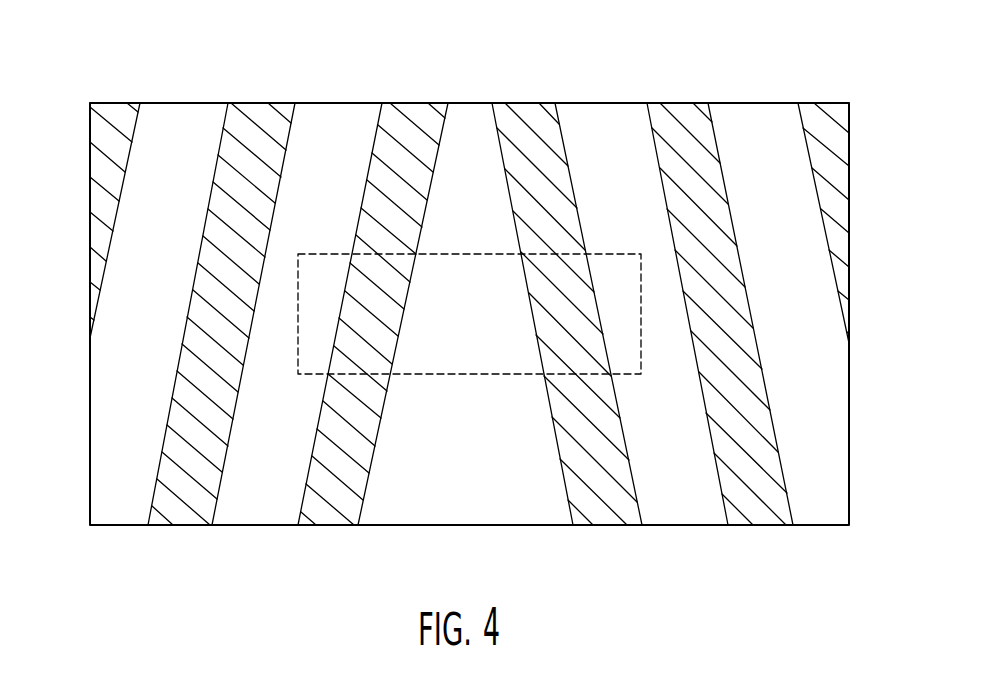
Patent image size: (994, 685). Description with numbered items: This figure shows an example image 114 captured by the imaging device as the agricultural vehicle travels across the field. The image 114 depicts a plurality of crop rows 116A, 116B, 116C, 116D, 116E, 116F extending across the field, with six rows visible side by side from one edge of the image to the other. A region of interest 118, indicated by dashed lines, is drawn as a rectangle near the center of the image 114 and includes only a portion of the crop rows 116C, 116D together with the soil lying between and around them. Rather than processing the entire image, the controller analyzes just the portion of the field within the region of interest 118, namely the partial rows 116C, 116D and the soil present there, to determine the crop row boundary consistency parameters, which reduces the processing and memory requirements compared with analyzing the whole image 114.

The image 114 is at (106, 48).
The crop row 116A is at (134, 86).
The crop row 116B is at (270, 86).
The crop row 116C is at (422, 86).
The crop row 116D is at (526, 86).
The crop row 116E is at (674, 86).
The crop row 116F is at (820, 86).
The region of interest 118 is at (437, 380).